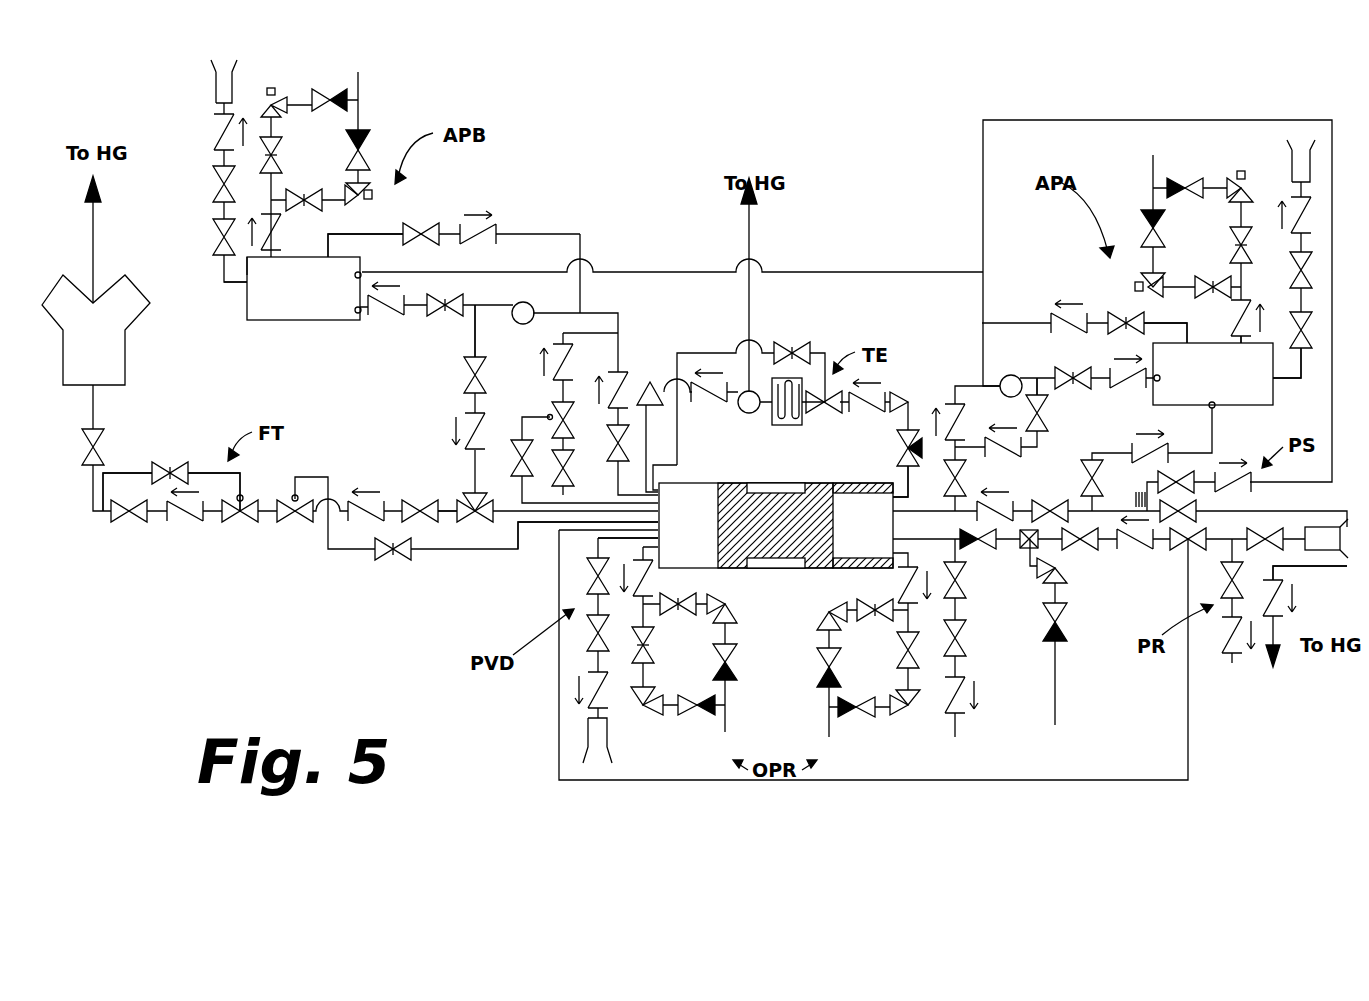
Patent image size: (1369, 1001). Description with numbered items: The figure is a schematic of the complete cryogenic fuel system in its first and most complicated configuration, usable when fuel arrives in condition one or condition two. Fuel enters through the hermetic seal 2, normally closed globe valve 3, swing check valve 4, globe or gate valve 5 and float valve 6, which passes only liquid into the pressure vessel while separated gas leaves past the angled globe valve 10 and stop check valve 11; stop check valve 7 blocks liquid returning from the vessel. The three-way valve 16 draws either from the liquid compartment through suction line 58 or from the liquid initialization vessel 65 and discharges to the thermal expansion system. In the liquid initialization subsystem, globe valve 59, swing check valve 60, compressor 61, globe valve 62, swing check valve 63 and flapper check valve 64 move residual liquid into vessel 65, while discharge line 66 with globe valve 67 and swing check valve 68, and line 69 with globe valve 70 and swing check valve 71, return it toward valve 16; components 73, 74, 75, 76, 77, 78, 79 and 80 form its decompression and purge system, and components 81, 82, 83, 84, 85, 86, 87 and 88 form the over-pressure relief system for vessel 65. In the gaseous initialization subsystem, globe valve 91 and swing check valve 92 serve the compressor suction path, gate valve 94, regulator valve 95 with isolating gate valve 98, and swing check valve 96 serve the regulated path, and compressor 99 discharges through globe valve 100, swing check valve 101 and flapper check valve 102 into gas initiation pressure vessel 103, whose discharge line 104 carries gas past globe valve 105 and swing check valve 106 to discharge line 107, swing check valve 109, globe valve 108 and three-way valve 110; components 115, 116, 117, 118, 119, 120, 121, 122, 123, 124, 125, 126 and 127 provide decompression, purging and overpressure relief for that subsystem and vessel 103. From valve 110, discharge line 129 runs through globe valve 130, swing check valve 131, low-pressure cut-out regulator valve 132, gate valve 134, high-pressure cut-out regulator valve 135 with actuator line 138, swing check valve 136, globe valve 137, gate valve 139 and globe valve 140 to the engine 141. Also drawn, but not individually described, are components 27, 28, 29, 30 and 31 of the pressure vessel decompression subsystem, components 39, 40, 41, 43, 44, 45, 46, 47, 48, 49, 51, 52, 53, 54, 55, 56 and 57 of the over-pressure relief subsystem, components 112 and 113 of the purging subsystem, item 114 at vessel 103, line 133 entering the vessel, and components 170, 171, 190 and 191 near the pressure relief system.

The hermetic seal 2 is at (1326, 538).
The normally closed globe valve 3 is at (1265, 545).
The swing check valve 4 is at (1135, 539).
The normally closed globe or gate valve 5 is at (1080, 545).
The float type valve 6 is at (1026, 548).
The normally closed stop check valve 7 is at (978, 547).
The normally opened angled globe valve 10 is at (1062, 574).
The normally open stop check valve 11 is at (1047, 622).
The three-way valve 16 is at (899, 448).
The line 27 is at (596, 551).
The valve 28 is at (588, 576).
The valve 29 is at (588, 633).
The regulator 30 is at (585, 690).
The vent 31 is at (597, 749).
The valve 39 is at (962, 580).
The valve 40 is at (962, 638).
The regulator 41 is at (969, 695).
The regulator 43 is at (908, 585).
The valve 44 is at (899, 650).
The valve 45 is at (907, 710).
The check valve 46 is at (856, 714).
The valve 47 is at (866, 604).
The valve 48 is at (827, 614).
The check valve 49 is at (822, 667).
The regulator 51 is at (643, 578).
The valve 52 is at (653, 645).
The valve 53 is at (646, 707).
The check valve 54 is at (696, 711).
The valve 55 is at (678, 599).
The valve 56 is at (729, 604).
The check valve 57 is at (735, 662).
The liquid initialization system suction line 58 is at (942, 506).
The normally closed globe valve 59 is at (961, 478).
The swing check valve 60 is at (957, 422).
The compressor 61 is at (1006, 377).
The normally closed globe valve 62 is at (1073, 385).
The swing check valve 63 is at (1128, 379).
The flapper check valve 64 is at (1167, 375).
The liquid initialization vessel 65 is at (1213, 374).
The discharge line 66 is at (1165, 325).
The normally open globe valve 67 is at (1126, 331).
The swing check valve 68 is at (1069, 325).
The liquid initialization system discharge line 69 is at (1035, 378).
The normally open globe valve 70 is at (1045, 413).
The swing check valve 71 is at (1003, 450).
The decompression and purge system component 73 is at (1098, 478).
The decompression and purge system component 74 is at (1150, 453).
The decompression and purge system component 75 is at (1219, 396).
The decompression and purge system component 76 is at (1287, 372).
The decompression and purge system component 77 is at (1308, 330).
The decompression and purge system component 78 is at (1308, 270).
The decompression and purge system component 79 is at (1301, 215).
The decompression and purge system component 80 is at (1301, 158).
The over-pressure relief system component 81 is at (1243, 341).
The over-pressure relief system component 82 is at (1238, 318).
The over-pressure relief system component 83 is at (1249, 246).
The over-pressure relief system component 84 is at (1248, 186).
The over-pressure relief system component 85 is at (1185, 182).
The over-pressure relief system component 86 is at (1213, 278).
The over-pressure relief system component 87 is at (1155, 280).
The over-pressure relief system component 88 is at (1161, 228).
The normally closed globe valve 91 is at (609, 443).
The swing check valve 92 is at (603, 390).
The normally closed gate valve 94 is at (569, 468).
The low-pressure cut-out regulator valve 95 is at (569, 420).
The swing check valve 96 is at (564, 362).
The normally open gate valve 98 is at (512, 468).
The compressor 99 is at (532, 302).
The normally closed globe valve 100 is at (445, 310).
The swing check valve 101 is at (386, 306).
The flapper check valve 102 is at (342, 312).
The gas initiation pressure vessel 103 is at (308, 303).
The gas initialization vessel discharge line 104 is at (362, 236).
The normally open globe valve 105 is at (421, 242).
The swing check valve 106 is at (478, 236).
The gas initialization system discharge line 107 is at (475, 340).
The normally open globe valve 108 is at (465, 375).
The swing check valve 109 is at (451, 432).
The three-way valve 110 is at (467, 501).
The valve 112 is at (1178, 476).
The check valve 113 is at (1233, 470).
The port 114 is at (344, 280).
The decompression, purge and overpressure relief subsystem component 115 is at (224, 286).
The decompression, purge and overpressure relief subsystem component 116 is at (110, 250).
The decompression, purge and overpressure relief subsystem component 117 is at (211, 184).
The decompression, purge and overpressure relief subsystem component 118 is at (218, 132).
The decompression, purge and overpressure relief subsystem component 119 is at (222, 73).
The decompression, purge and overpressure relief subsystem component 120 is at (247, 257).
The decompression, purge and overpressure relief subsystem component 121 is at (280, 232).
The decompression, purge and overpressure relief subsystem component 122 is at (261, 155).
The decompression, purge and overpressure relief subsystem component 123 is at (264, 102).
The decompression, purge and overpressure relief subsystem component 124 is at (329, 93).
The valve 125 is at (304, 192).
The decompression, purge and overpressure relief subsystem component 126 is at (347, 191).
The decompression, purge and overpressure relief subsystem component 127 is at (371, 150).
The discharge line 129 is at (455, 505).
The normally open globe valve 130 is at (420, 519).
The swing check valve 131 is at (366, 513).
The low-pressure cut-out regulator valve 132 is at (295, 517).
The line 133 is at (520, 551).
The normally open gate valve 134 is at (393, 561).
The high-pressure cut-out regulator valve 135 is at (240, 517).
The swing check valve 136 is at (185, 513).
The normally open globe valve 137 is at (129, 519).
The pressure regulator valve actuator line 138 is at (143, 478).
The normally open gate valve 139 is at (170, 464).
The normally open globe valve 140 is at (80, 447).
The engine 141 is at (108, 345).
The line 170 is at (1312, 569).
The regulator 171 is at (1293, 598).
The valve 190 is at (1219, 580).
The regulator 191 is at (1226, 635).